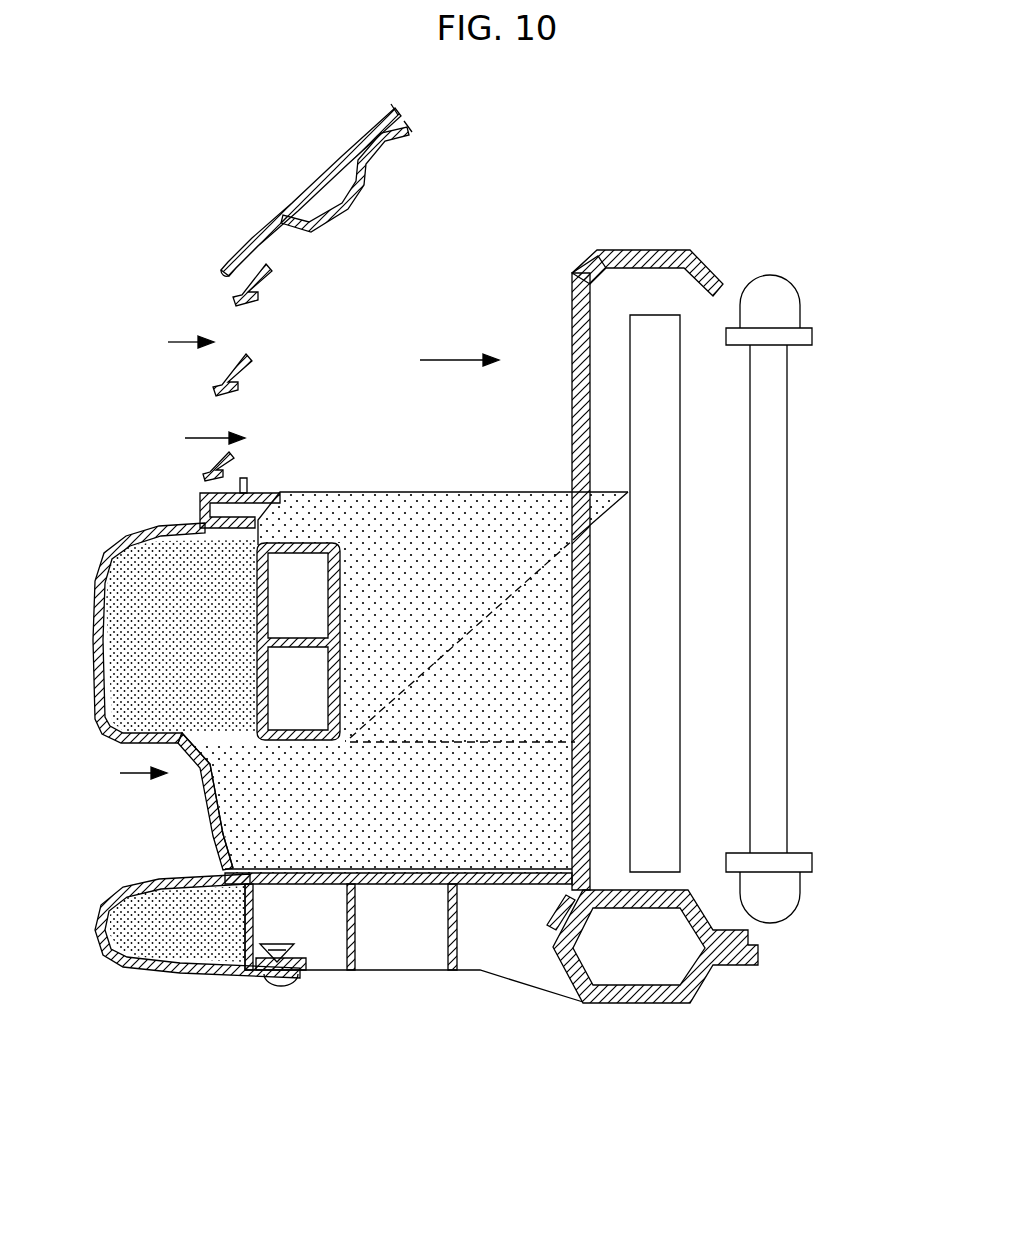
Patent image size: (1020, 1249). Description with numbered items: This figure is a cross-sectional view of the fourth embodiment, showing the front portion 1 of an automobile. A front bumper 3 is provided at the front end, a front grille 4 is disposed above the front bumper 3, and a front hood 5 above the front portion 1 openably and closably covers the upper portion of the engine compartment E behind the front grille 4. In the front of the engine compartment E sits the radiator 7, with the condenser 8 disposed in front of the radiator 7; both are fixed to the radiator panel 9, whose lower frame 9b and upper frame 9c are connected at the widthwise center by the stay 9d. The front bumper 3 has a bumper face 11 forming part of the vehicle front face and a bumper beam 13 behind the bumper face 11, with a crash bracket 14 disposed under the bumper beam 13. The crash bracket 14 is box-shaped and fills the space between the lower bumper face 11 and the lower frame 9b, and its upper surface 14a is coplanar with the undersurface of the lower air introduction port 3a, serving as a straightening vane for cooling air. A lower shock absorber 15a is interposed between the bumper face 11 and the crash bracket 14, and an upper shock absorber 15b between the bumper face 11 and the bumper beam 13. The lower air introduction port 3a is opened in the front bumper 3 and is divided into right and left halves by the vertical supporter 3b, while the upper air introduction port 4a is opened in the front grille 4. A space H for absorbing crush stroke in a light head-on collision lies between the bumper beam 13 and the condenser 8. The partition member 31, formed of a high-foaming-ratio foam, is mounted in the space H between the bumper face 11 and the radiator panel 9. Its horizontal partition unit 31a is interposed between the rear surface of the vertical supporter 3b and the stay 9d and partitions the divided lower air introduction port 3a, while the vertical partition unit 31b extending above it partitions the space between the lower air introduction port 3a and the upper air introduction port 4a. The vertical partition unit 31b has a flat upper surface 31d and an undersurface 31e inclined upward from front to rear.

The front portion 1 is at (287, 106).
The front hood 5 is at (372, 130).
The front grille 4 is at (232, 297).
The upper air introduction port 4a is at (310, 432).
The front bumper 3 is at (237, 1014).
The lower air introduction port 3a is at (212, 828).
The vertical supporter 3b is at (200, 797).
The bumper face 11 is at (130, 530).
The lower shock absorber 15a is at (152, 965).
The upper shock absorber 15b is at (175, 545).
The bumper beam 13 is at (313, 735).
The crash bracket 14 is at (400, 972).
The upper surface 14a is at (413, 843).
The partition member 31 is at (438, 478).
The horizontal partition unit 31a is at (483, 820).
The vertical partition unit 31b is at (388, 540).
The upper surface 31d is at (515, 490).
The undersurface 31e is at (612, 507).
The radiator panel 9 is at (719, 244).
The lower frame 9b is at (638, 1003).
The upper frame 9c is at (660, 255).
The stay 9d is at (572, 305).
The condenser 8 is at (676, 597).
The radiator 7 is at (780, 662).
The engine compartment E is at (855, 572).
The space H is at (550, 703).